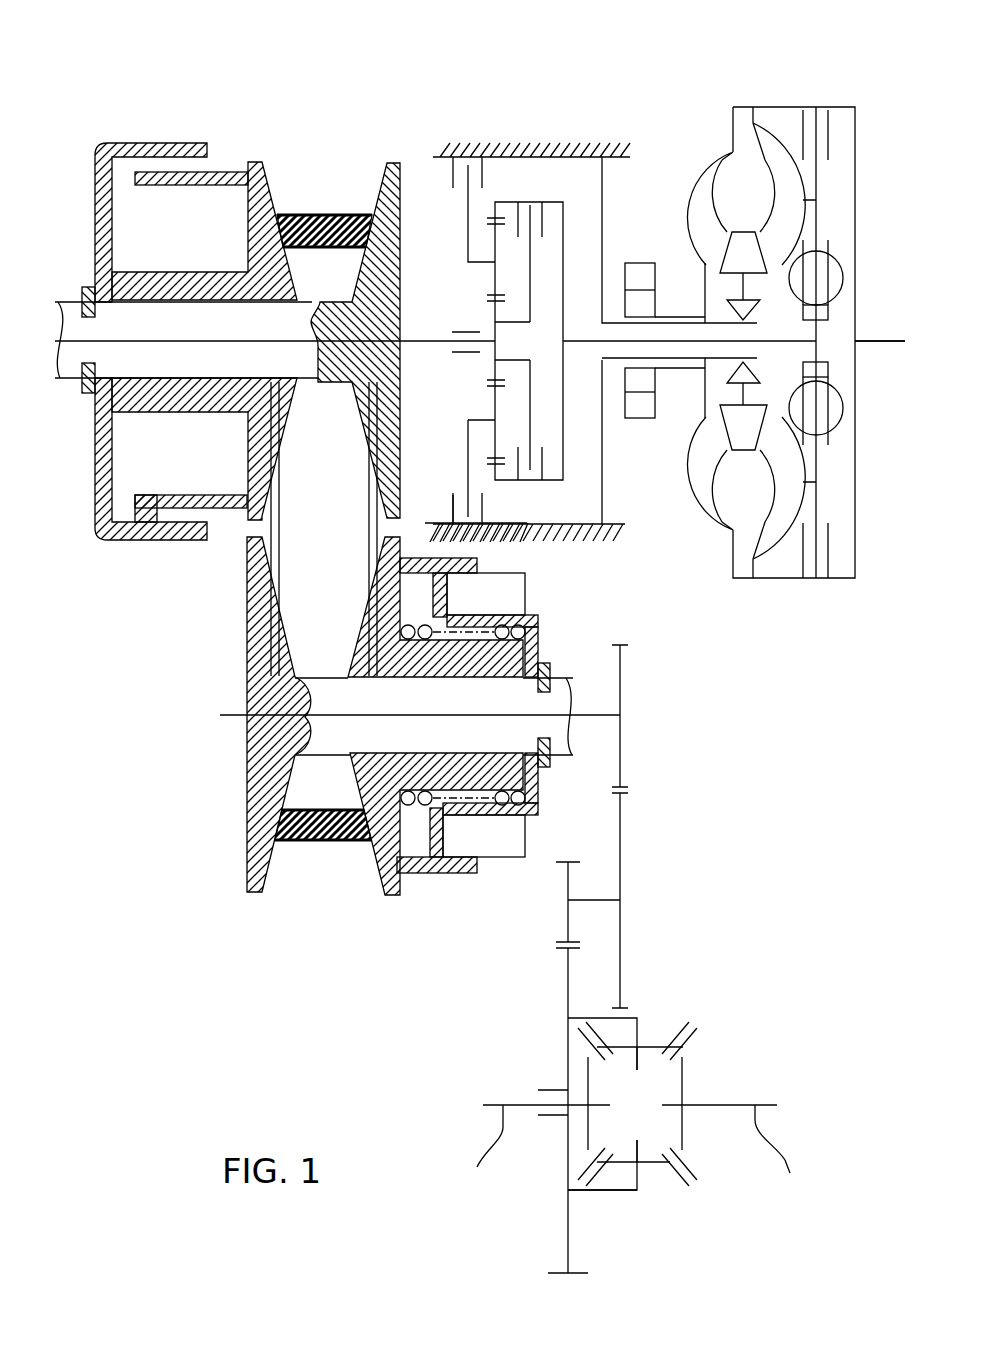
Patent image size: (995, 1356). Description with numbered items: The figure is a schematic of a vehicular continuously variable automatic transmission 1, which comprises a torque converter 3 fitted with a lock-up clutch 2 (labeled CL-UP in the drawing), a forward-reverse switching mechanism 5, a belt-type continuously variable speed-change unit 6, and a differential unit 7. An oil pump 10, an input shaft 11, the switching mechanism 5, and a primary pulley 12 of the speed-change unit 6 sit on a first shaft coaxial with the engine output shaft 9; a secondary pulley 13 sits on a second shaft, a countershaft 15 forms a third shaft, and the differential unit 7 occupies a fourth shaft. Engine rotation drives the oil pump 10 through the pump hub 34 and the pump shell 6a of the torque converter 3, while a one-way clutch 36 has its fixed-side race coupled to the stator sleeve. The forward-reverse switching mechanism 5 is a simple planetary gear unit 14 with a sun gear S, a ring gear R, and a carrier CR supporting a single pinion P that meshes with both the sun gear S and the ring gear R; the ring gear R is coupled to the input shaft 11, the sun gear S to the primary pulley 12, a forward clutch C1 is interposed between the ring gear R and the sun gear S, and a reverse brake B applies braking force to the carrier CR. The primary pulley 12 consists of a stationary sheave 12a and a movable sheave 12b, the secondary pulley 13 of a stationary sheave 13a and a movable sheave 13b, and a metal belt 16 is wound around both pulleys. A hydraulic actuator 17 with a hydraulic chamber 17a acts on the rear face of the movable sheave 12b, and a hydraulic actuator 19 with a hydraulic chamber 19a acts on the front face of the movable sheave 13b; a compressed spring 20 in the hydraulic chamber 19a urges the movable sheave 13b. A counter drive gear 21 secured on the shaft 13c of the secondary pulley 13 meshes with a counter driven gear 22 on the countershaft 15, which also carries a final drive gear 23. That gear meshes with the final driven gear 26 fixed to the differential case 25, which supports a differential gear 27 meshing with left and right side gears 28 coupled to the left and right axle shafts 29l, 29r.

The continuously variable automatic transmission 1 is at (240, 106).
The lock-up clutch 2 is at (823, 137).
The torque converter 3 is at (713, 80).
The forward-reverse switching mechanism 5 is at (586, 128).
The belt-type continuously variable speed-change unit 6 is at (205, 584).
The pump shell 6a is at (721, 145).
The differential unit 7 is at (722, 1021).
The engine output shaft 9 is at (875, 340).
The oil pump 10 is at (641, 263).
The input shaft 11 is at (682, 358).
The primary pulley 12 is at (333, 82).
The stationary sheave 12a is at (378, 178).
The movable sheave 12b is at (272, 185).
The secondary pulley 13 is at (270, 927).
The stationary sheave 13a is at (246, 823).
The movable sheave 13b is at (378, 892).
The shaft of the secondary pulley 13c is at (557, 685).
The simple planetary gear unit 14 is at (523, 190).
The countershaft 15 is at (593, 900).
The metal belt 16 is at (328, 843).
The hydraulic actuator 17 is at (122, 188).
The hydraulic chamber 17a is at (140, 217).
The hydraulic actuator 19 is at (470, 842).
The hydraulic chamber 19a is at (415, 860).
The spring 20 is at (505, 630).
The counter drive gear 21 is at (622, 680).
The counter driven gear 22 is at (620, 817).
The final drive gear 23 is at (567, 873).
The differential case 25 is at (603, 1195).
The final driven gear 26 is at (568, 980).
The differential gear 27 is at (652, 1043).
The side gears 28 is at (568, 1078).
The left axle shaft 29l is at (534, 1149).
The right axle shaft 29r is at (737, 1158).
The pump hub 34 is at (703, 290).
The one-way clutch 36 is at (738, 232).
The reverse brake B is at (462, 140).
The forward clutch C1 is at (531, 210).
The ring gear R is at (495, 210).
The carrier CR is at (470, 245).
The sun gear S is at (493, 314).
The pinion P is at (498, 275).
The lock-up clutch CL-UP is at (813, 327).